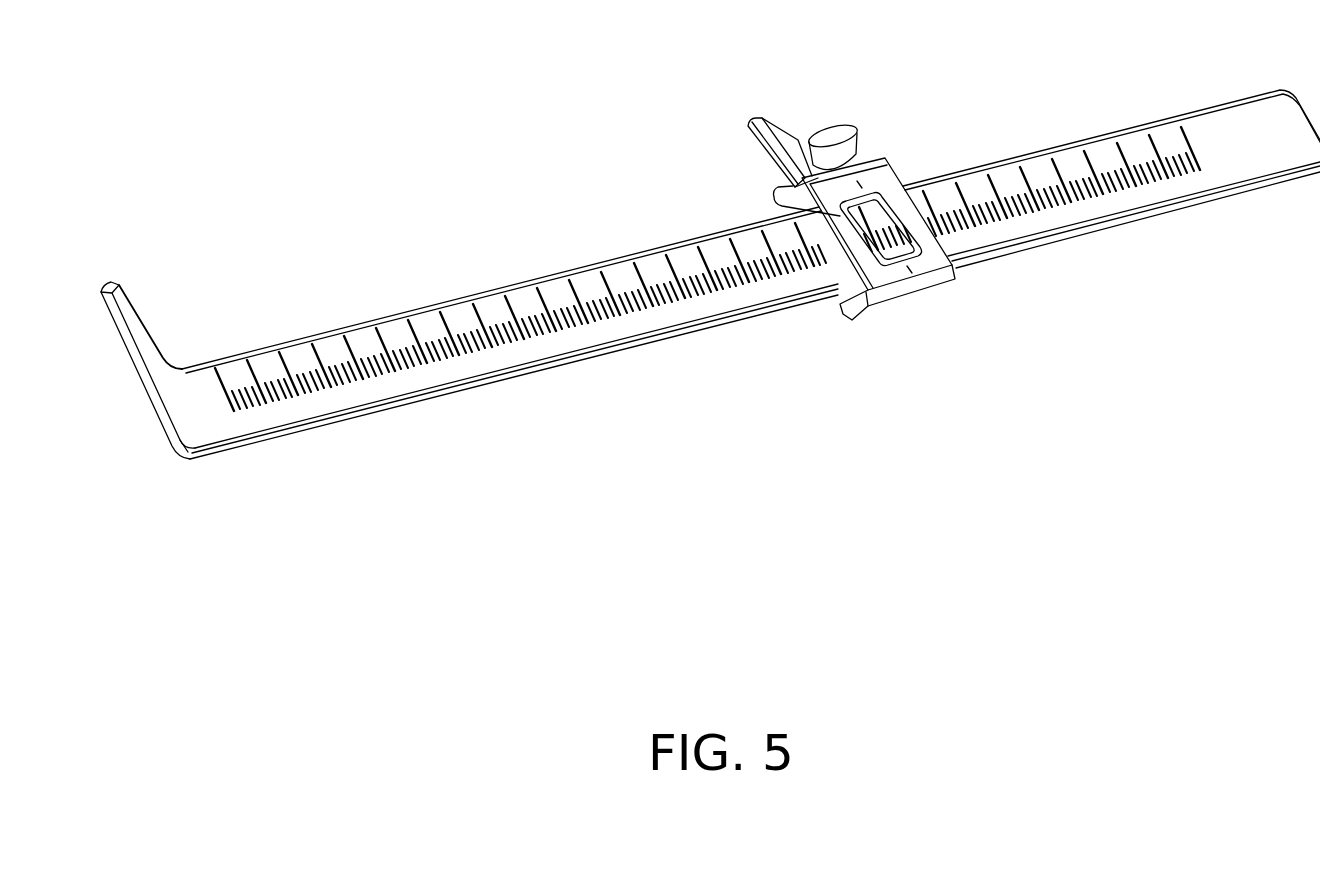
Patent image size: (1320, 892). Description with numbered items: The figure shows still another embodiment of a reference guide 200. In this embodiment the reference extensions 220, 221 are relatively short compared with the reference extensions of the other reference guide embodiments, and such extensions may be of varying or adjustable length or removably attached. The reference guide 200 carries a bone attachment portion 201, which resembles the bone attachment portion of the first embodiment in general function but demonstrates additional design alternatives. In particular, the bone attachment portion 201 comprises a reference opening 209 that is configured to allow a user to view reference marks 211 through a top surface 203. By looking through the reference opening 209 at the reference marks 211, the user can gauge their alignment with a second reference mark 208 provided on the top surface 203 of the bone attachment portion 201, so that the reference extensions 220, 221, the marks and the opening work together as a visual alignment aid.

The reference guide 200 is at (485, 156).
The bone attachment portion 201 is at (888, 148).
The top surface 203 is at (888, 180).
The second reference mark 208 is at (780, 190).
The reference opening 209 is at (850, 220).
The reference marks 211 is at (226, 383).
The reference extension 220 is at (120, 292).
The reference extension 221 is at (757, 117).